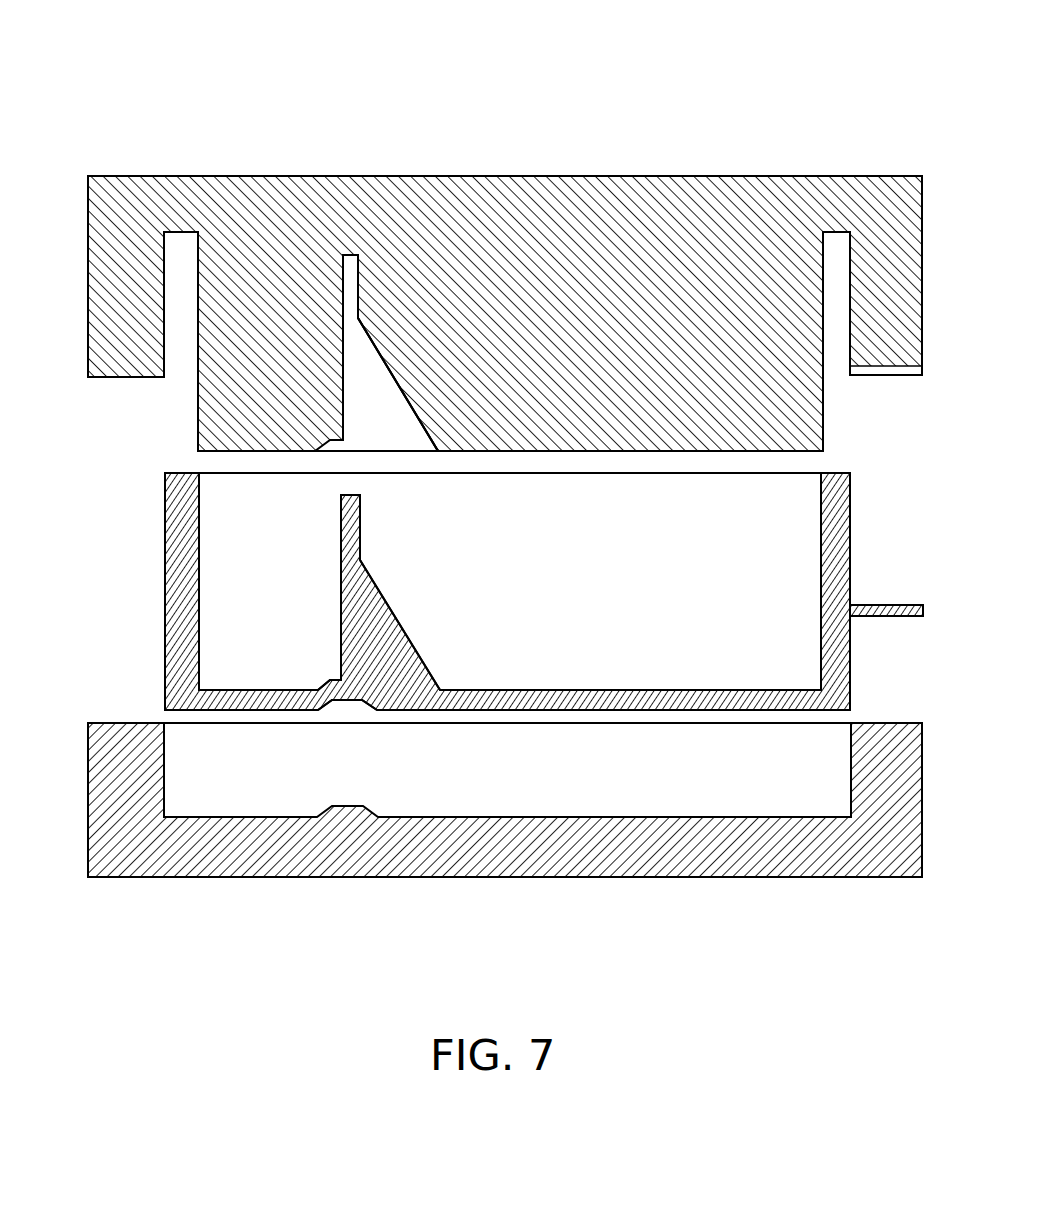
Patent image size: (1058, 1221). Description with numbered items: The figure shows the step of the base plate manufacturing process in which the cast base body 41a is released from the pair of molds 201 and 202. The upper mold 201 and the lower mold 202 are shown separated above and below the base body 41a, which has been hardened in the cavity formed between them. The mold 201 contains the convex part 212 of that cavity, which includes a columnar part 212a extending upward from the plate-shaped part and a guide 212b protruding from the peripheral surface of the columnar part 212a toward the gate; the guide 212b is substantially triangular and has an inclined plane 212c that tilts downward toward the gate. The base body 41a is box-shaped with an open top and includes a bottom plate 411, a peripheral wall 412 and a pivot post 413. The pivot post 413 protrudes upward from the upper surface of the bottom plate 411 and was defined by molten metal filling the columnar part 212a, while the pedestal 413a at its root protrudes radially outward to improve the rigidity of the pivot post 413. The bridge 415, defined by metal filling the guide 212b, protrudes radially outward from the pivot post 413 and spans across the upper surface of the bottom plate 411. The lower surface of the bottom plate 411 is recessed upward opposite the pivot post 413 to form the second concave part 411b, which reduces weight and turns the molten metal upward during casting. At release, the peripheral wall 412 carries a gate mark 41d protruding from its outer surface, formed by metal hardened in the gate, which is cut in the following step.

The mold 201 is at (580, 198).
The mold 202 is at (608, 850).
The convex part 212 is at (262, 27).
The columnar part 212a is at (345, 362).
The guide 212b is at (373, 360).
The inclined plane 212c is at (397, 373).
The bottom plate 411 is at (615, 692).
The second concave part 411b is at (360, 700).
The peripheral wall 412 is at (165, 573).
The base body 41a is at (850, 505).
The gate mark 41d is at (887, 603).
The pivot post 413 is at (341, 517).
The pedestal 413a is at (330, 678).
The bridge 415 is at (402, 628).